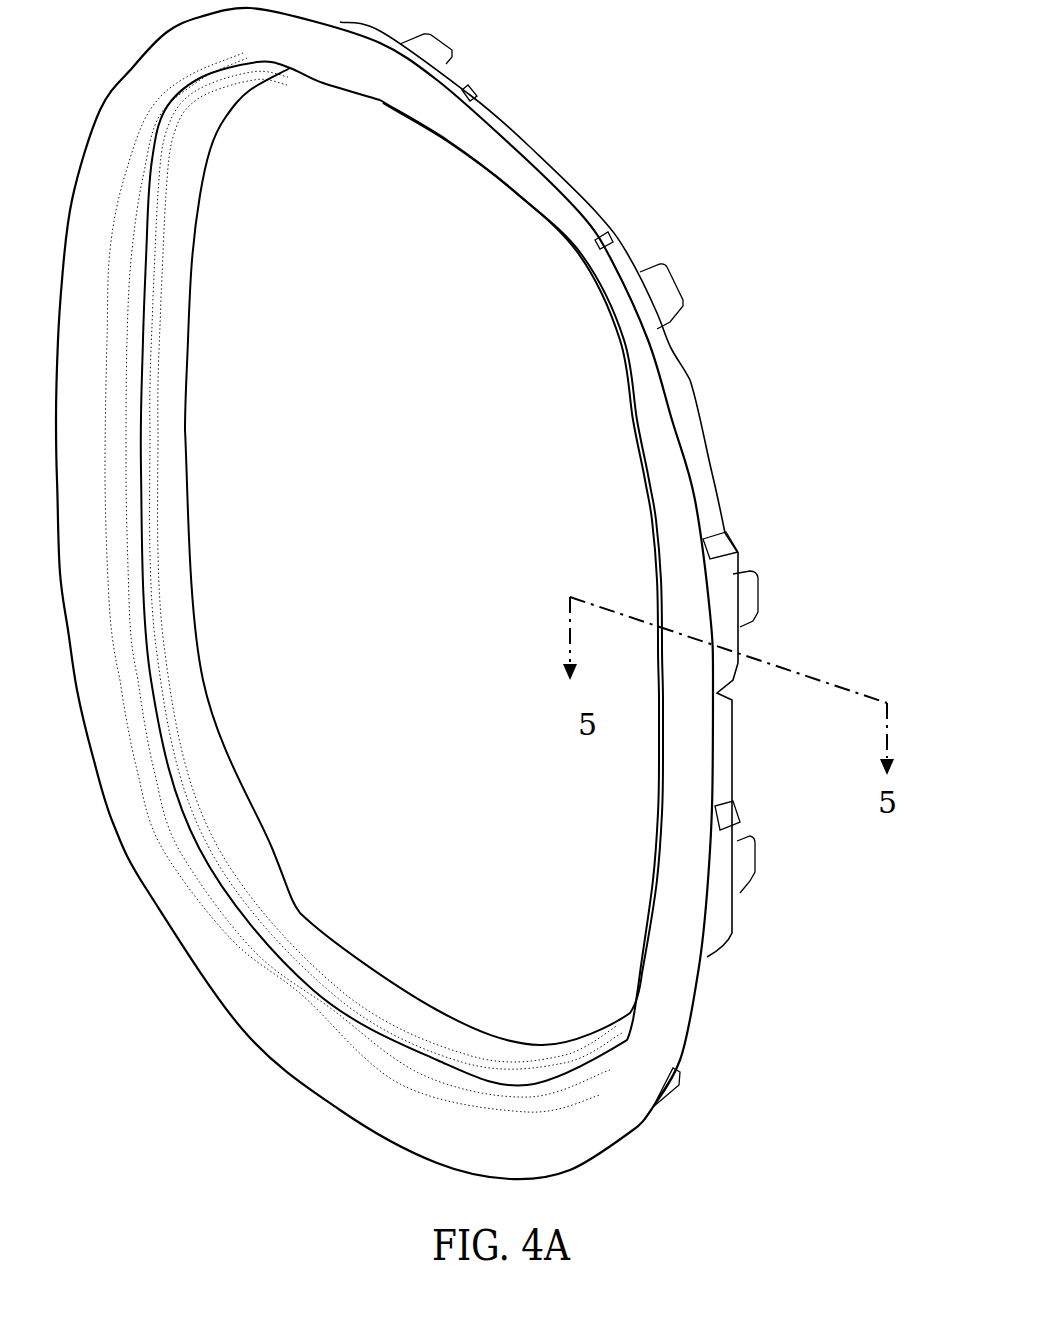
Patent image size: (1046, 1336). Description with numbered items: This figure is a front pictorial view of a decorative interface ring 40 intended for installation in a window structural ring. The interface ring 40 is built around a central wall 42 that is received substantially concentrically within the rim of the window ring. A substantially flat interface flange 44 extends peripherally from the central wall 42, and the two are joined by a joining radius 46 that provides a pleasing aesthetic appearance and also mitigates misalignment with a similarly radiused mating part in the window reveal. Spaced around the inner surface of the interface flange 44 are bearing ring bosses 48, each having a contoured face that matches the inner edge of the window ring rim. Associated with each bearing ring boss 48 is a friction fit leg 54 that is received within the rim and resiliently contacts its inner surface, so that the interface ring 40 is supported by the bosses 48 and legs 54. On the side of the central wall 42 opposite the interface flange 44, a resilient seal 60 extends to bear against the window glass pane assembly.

The decorative interface ring 40 is at (683, 490).
The central wall 42 is at (263, 960).
The interface flange 44 is at (273, 1027).
The joining radius 46 is at (300, 1023).
The bearing ring bosses 48 is at (468, 88).
The friction fit leg 54 is at (433, 46).
The resilient seal 60 is at (215, 751).